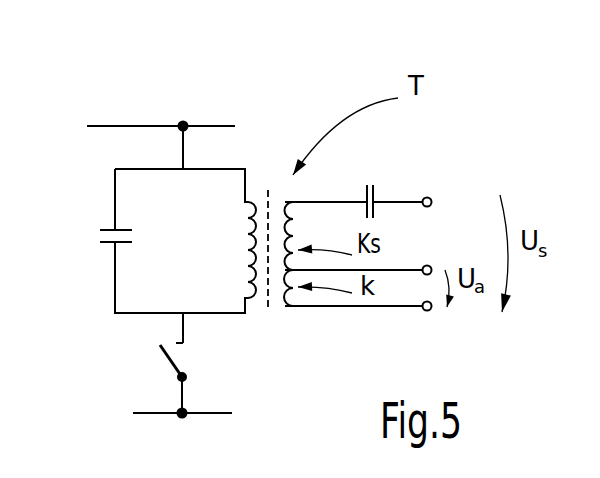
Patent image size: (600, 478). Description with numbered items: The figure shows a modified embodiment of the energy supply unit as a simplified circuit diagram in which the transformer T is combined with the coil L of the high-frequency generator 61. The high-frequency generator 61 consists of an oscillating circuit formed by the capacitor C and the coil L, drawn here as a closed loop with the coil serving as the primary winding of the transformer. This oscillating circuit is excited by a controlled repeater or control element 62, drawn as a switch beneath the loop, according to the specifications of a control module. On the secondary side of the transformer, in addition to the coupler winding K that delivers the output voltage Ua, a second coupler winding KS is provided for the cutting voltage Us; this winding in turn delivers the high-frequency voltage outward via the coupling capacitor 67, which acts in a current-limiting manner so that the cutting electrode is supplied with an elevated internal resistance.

The high-frequency generator 61 is at (250, 137).
The control element 62 is at (157, 363).
The coupling capacitor 67 is at (378, 197).